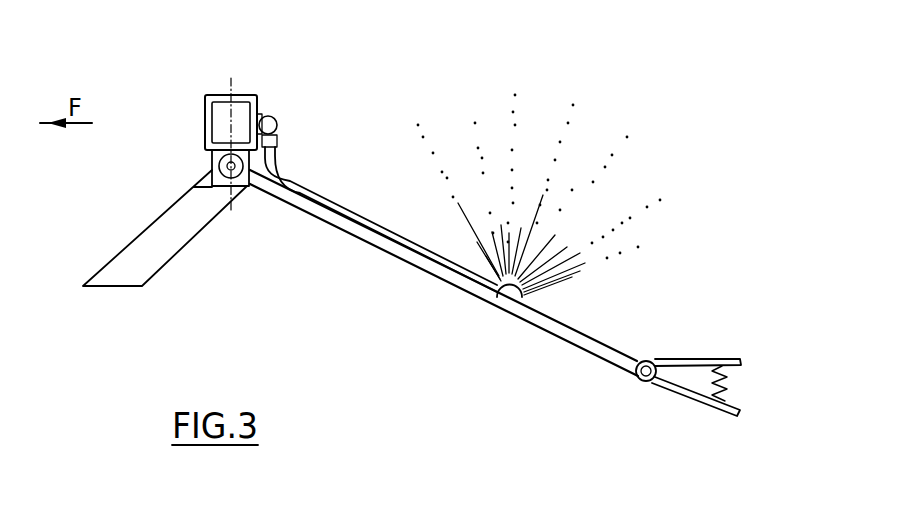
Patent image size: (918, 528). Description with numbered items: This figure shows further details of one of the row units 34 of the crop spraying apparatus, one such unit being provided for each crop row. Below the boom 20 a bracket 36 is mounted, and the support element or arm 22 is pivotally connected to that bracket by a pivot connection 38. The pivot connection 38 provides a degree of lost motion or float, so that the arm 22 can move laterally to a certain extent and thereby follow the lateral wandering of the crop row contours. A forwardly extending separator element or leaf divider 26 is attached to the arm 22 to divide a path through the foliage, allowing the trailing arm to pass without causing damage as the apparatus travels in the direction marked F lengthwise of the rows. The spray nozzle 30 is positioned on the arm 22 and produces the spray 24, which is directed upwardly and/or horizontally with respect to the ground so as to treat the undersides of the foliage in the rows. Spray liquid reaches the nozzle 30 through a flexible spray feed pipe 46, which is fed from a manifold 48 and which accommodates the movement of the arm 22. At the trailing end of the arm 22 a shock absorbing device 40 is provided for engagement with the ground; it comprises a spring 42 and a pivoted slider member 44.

The boom 20 is at (212, 95).
The support element or arm 22 is at (368, 244).
The spray 24 is at (622, 169).
The separator element or leaf divider 26 is at (135, 273).
The spray nozzle 30 is at (522, 293).
The row unit 34 is at (389, 287).
The bracket 36 is at (212, 153).
The pivot connection 38 is at (236, 190).
The shock absorbing device 40 is at (680, 405).
The spring 42 is at (733, 388).
The pivoted slider member 44 is at (725, 415).
The flexible spray feed pipe 46 is at (330, 193).
The manifold 48 is at (278, 116).